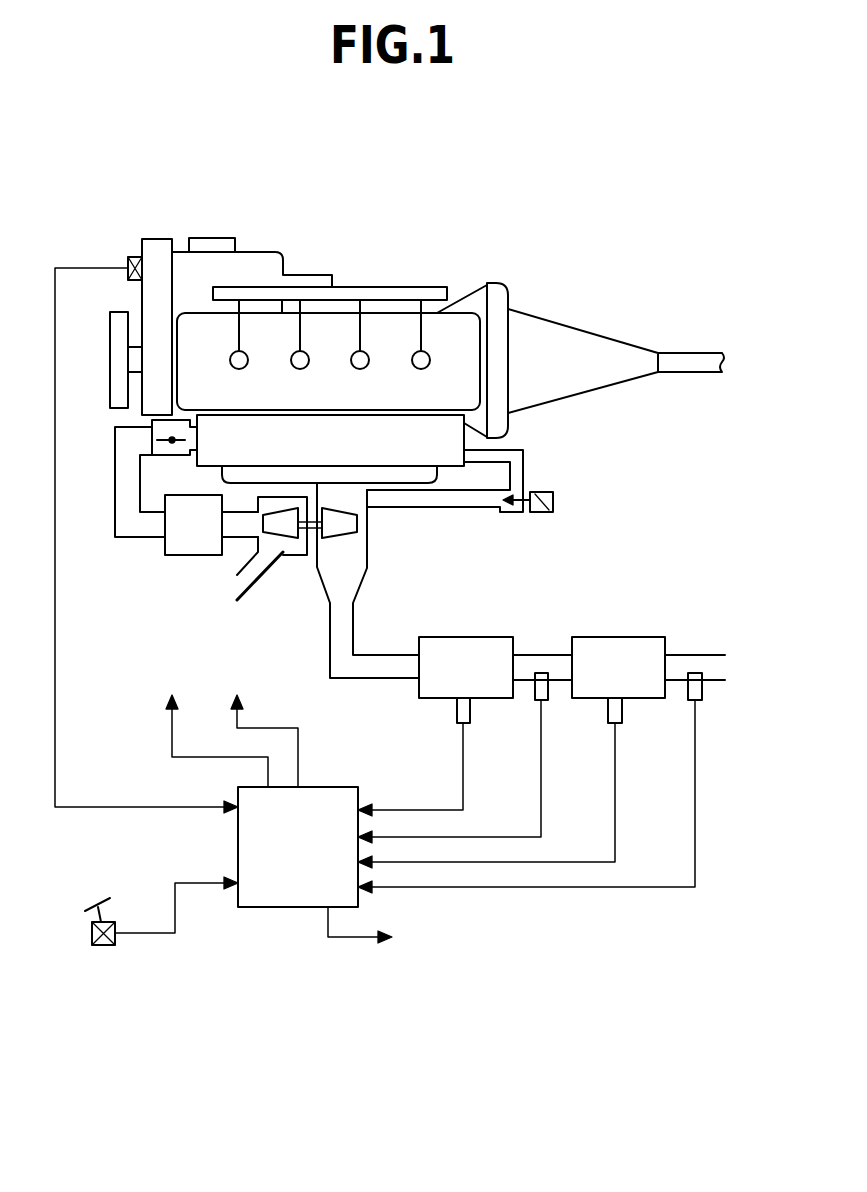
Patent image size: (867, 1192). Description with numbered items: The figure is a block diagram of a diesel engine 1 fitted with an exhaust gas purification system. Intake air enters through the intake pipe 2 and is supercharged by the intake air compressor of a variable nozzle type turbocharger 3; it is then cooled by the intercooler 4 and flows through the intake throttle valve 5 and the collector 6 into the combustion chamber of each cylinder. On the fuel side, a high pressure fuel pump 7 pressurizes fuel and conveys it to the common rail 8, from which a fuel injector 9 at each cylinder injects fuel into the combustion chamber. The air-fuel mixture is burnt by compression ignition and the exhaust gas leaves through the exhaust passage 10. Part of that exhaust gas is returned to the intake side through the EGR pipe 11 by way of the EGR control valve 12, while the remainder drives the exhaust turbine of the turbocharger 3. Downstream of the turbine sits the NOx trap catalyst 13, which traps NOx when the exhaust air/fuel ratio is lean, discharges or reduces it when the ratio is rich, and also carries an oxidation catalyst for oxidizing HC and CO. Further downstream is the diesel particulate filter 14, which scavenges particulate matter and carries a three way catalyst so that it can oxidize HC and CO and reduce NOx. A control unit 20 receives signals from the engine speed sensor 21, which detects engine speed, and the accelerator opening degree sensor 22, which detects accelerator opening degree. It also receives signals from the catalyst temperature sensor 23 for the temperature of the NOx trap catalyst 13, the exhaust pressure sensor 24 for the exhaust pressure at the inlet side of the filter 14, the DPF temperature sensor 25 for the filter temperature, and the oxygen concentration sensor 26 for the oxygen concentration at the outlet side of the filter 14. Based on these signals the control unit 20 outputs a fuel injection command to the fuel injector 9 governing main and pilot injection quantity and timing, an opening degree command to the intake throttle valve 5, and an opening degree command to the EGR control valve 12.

The diesel engine 1 is at (457, 320).
The intake pipe 2 is at (263, 585).
The variable nozzle type turbocharger 3 is at (287, 540).
The intercooler 4 is at (188, 557).
The intake throttle valve 5 is at (171, 442).
The collector 6 is at (212, 452).
The high pressure fuel pump 7 is at (251, 250).
The common rail 8 is at (362, 286).
The fuel injector 9 is at (246, 367).
The exhaust passage 10 is at (347, 585).
The EGR pipe 11 is at (480, 510).
The EGR control valve 12 is at (547, 491).
The NOx trap catalyst 13 is at (462, 637).
The diesel particulate filter 14 is at (610, 637).
The control unit 20 is at (267, 908).
The engine speed sensor 21 is at (126, 258).
The accelerator opening degree sensor 22 is at (104, 946).
The catalyst temperature sensor 23 is at (458, 723).
The exhaust pressure sensor 24 is at (537, 700).
The DPF temperature sensor 25 is at (608, 723).
The oxygen concentration sensor 26 is at (687, 700).